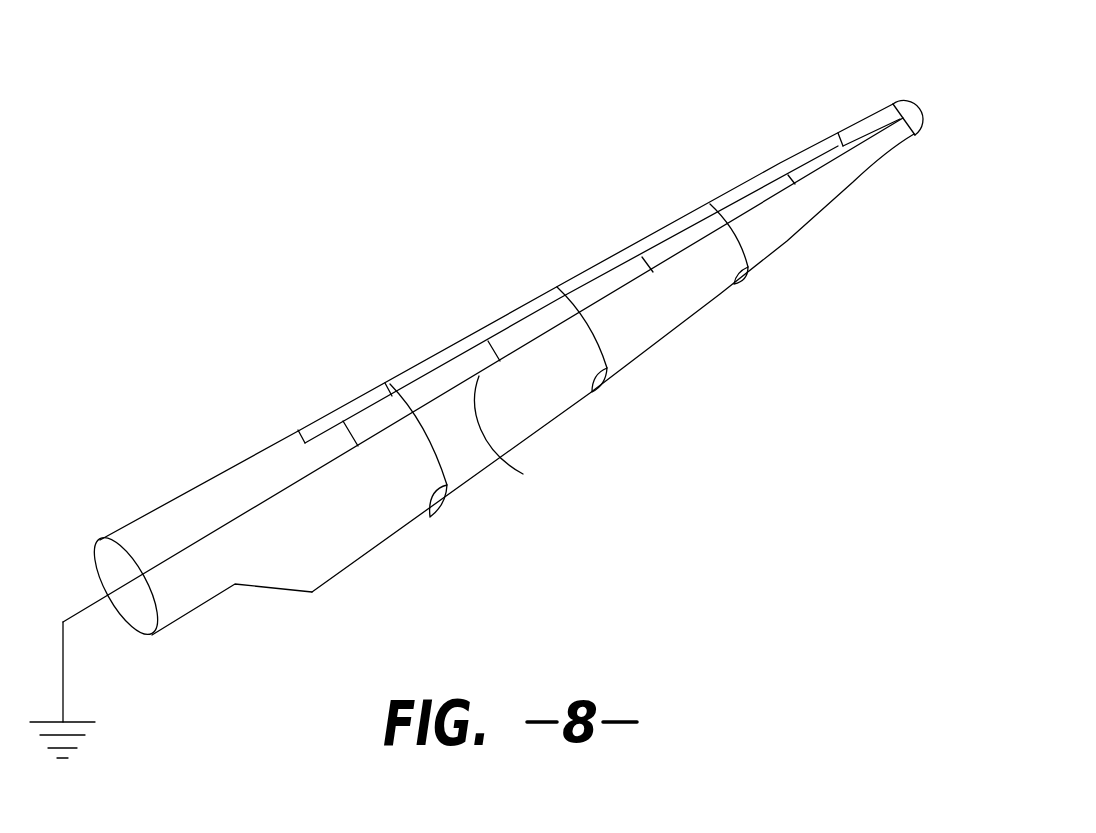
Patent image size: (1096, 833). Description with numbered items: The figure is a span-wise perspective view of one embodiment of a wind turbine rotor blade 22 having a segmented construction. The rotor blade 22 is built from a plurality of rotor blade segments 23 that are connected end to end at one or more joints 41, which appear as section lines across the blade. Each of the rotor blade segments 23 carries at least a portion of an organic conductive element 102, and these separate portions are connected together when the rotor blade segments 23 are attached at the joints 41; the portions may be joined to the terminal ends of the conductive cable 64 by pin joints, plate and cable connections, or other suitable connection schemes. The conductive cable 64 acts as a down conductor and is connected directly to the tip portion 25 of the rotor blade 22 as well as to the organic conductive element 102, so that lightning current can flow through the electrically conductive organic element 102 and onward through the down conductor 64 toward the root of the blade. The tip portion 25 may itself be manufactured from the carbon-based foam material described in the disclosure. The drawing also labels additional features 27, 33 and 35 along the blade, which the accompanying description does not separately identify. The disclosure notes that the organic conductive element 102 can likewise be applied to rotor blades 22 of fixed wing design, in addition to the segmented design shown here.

The rotor blade 22 is at (350, 206).
The rotor blade segments 23 is at (317, 414).
The tip portion 25 is at (926, 104).
The blade root 27 is at (138, 516).
The lightning conductor strip 33 is at (592, 268).
The trailing edge 35 is at (673, 333).
The joints 41 is at (430, 512).
The conductive cable 64 is at (523, 436).
The organic conductive element 102 is at (413, 366).